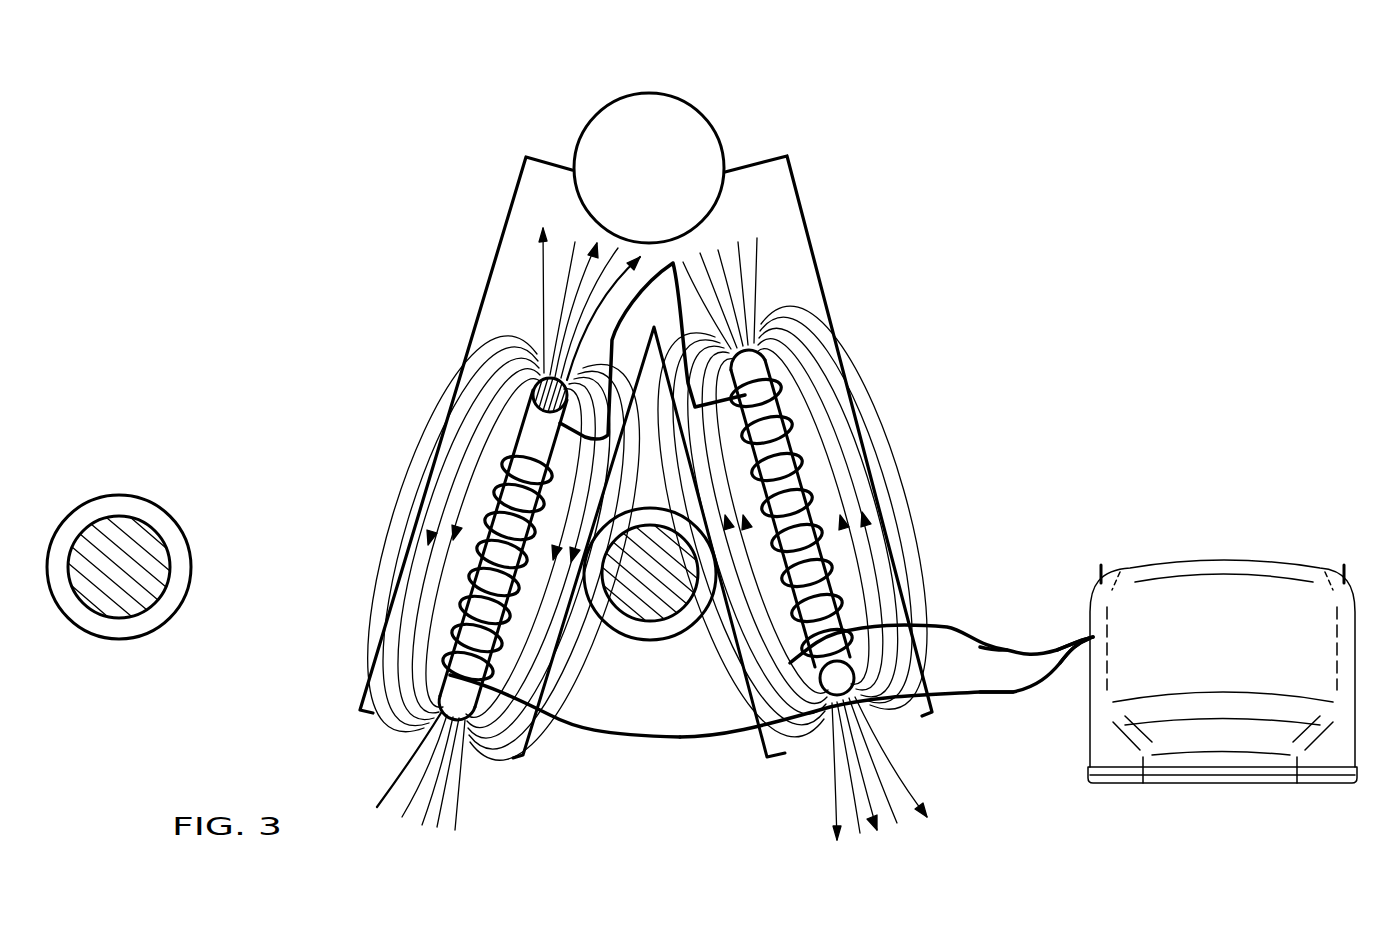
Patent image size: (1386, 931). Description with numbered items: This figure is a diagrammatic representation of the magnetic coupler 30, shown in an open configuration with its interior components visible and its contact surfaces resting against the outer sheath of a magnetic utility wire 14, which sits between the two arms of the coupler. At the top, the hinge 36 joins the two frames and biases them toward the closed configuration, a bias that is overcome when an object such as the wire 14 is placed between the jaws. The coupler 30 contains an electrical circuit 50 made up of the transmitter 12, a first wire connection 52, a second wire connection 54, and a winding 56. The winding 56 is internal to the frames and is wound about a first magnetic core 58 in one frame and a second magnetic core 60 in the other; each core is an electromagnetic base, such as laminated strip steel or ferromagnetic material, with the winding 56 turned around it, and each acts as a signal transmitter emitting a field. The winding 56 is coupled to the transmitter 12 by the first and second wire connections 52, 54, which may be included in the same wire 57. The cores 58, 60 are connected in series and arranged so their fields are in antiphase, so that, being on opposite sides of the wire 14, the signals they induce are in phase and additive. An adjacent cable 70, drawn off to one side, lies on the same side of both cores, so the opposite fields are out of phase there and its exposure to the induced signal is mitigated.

The coupler 30 is at (872, 100).
The hinge 36 is at (685, 135).
The first magnetic core 58 is at (498, 487).
The second magnetic core 60 is at (792, 493).
The wire 14 is at (650, 643).
The adjacent cable 70 is at (107, 640).
The winding 56 is at (522, 703).
The first wire connection 52 is at (985, 695).
The second wire connection 54 is at (930, 622).
The wire 57 is at (1080, 638).
The electrical circuit 50 is at (1000, 715).
The transmitter 12 is at (1305, 577).